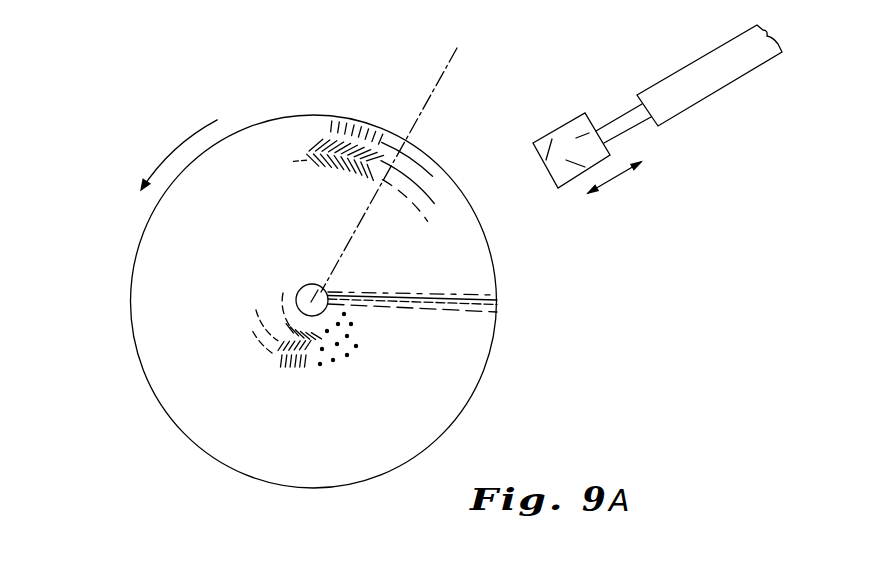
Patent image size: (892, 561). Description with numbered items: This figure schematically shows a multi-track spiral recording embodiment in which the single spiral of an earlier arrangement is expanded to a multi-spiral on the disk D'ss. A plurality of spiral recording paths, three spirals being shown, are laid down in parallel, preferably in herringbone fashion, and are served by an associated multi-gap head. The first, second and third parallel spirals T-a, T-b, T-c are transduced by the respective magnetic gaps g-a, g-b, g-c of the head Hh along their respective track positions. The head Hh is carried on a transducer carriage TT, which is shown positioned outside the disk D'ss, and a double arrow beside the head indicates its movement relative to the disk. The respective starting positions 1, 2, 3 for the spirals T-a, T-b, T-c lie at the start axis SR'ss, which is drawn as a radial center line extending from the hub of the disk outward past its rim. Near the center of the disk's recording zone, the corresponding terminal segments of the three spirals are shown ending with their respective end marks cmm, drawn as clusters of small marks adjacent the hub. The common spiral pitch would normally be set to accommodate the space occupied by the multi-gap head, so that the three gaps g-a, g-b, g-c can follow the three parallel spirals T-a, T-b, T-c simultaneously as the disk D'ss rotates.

The disk D'ss is at (98, 233).
The start axis SR'ss is at (389, 161).
The first parallel spiral T-a is at (335, 130).
The second parallel spiral T-b is at (310, 148).
The third parallel spiral T-c is at (303, 166).
The starting position 1 is at (414, 167).
The starting position 2 is at (415, 194).
The starting position 3 is at (410, 218).
The end marks cmm is at (350, 317).
The transducer carriage TT is at (757, 66).
The magnetic gap g-a is at (602, 90).
The magnetic gap g-b is at (583, 167).
The magnetic gap g-c is at (545, 148).
The head Hh is at (613, 149).